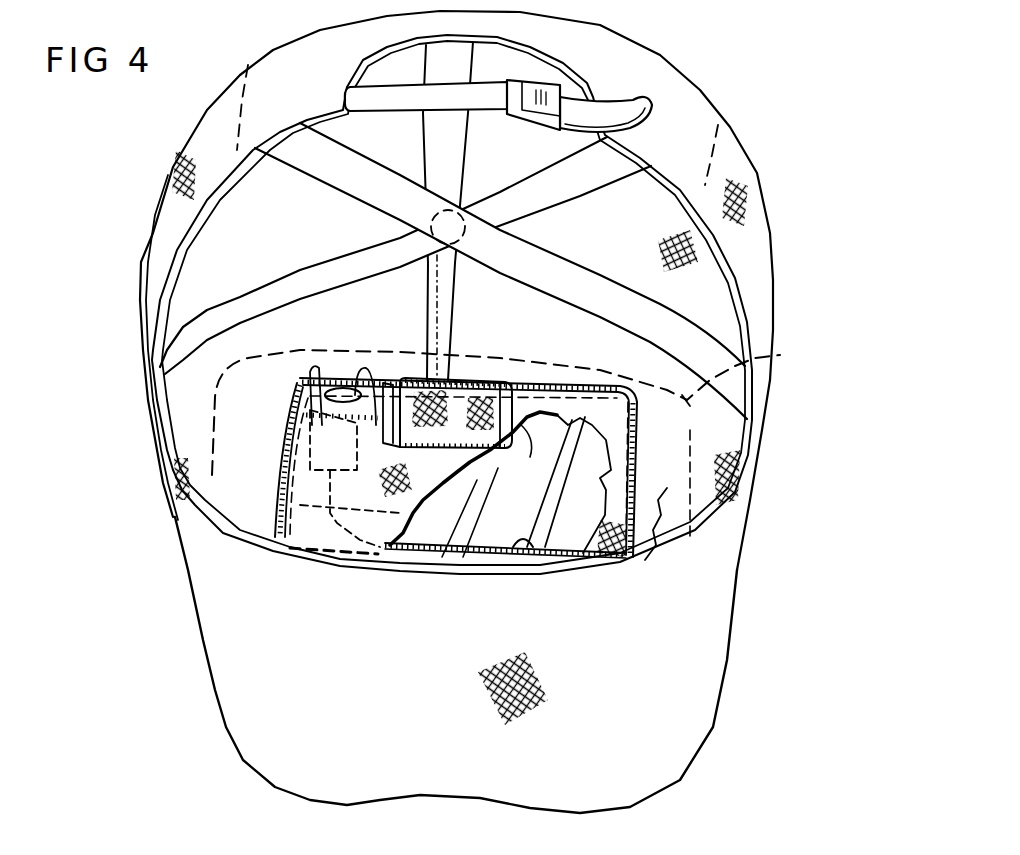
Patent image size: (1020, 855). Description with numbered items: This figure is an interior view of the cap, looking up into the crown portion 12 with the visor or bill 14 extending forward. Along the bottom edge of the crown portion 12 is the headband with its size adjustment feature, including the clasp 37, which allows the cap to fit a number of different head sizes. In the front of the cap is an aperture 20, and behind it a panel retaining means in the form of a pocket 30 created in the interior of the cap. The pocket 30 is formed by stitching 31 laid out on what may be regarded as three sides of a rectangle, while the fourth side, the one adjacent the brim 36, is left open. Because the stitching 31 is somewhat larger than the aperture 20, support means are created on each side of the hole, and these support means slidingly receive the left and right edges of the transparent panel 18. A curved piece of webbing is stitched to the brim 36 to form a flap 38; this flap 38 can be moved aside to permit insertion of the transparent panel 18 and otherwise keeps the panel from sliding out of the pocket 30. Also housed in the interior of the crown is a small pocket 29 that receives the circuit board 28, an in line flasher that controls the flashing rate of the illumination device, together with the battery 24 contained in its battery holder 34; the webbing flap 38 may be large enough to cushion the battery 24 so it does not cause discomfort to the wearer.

The crown portion 12 is at (687, 90).
The visor or bill 14 is at (245, 696).
The transparent panel 18 is at (548, 572).
The aperture 20 is at (503, 548).
The battery 24 is at (500, 484).
The circuit board / in line flasher 28 is at (297, 391).
The small pocket 29 is at (335, 444).
The pocket 30 is at (613, 470).
The stitching 31 is at (300, 503).
The battery holder 34 is at (485, 393).
The brim 36 is at (413, 573).
The clasp 37 is at (545, 94).
The flap 38 is at (514, 406).